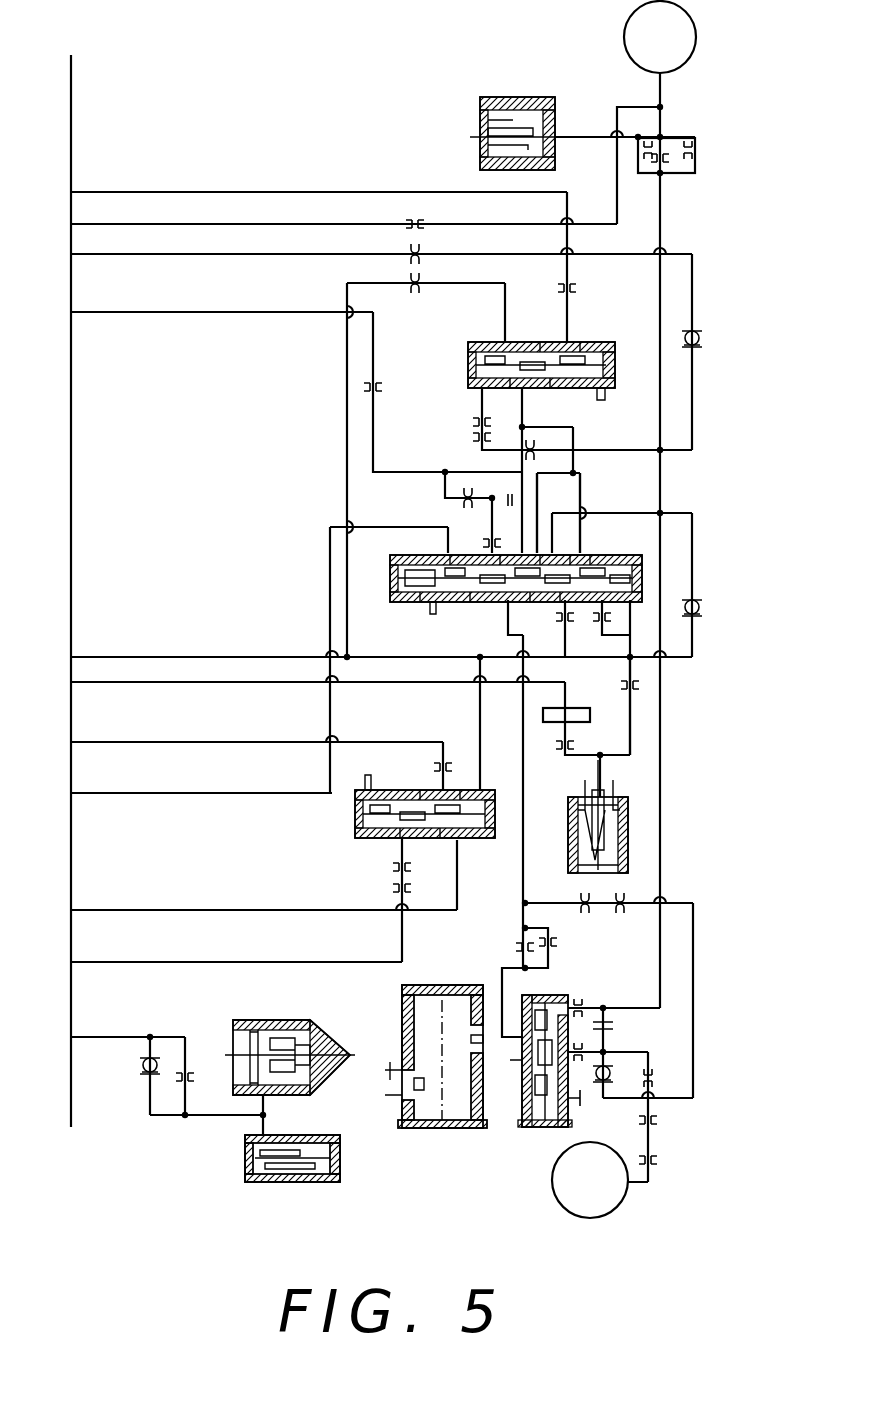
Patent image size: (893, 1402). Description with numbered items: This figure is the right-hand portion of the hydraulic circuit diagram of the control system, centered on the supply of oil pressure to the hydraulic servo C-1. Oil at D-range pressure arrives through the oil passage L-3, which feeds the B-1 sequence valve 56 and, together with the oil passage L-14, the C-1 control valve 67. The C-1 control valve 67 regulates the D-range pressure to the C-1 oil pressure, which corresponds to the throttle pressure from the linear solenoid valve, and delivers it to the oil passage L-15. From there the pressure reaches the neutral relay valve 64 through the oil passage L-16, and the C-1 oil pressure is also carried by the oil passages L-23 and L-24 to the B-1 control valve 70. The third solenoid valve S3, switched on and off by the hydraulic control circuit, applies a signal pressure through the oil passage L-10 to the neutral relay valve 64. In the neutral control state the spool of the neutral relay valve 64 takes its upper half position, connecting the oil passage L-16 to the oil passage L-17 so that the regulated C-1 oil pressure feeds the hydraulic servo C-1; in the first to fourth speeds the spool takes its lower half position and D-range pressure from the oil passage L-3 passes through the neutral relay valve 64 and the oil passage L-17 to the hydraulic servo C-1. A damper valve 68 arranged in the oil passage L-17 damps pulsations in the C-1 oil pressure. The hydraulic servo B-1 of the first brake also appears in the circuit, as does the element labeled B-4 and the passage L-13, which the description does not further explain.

The damper valve 68 is at (525, 97).
The C-1 control valve 67 is at (600, 342).
The neutral relay valve 64 is at (642, 572).
The B-1 sequence valve 56 is at (357, 840).
The B-1 control valve 70 is at (558, 995).
The third solenoid valve S3 is at (613, 815).
The brake B-4 is at (290, 1040).
The hydraulic servo of the first brake B-1 is at (590, 1180).
The hydraulic servo C-1 is at (660, 37).
The oil line L-13 is at (343, 192).
The oil passage L-14 is at (450, 290).
The oil passage L-15 is at (523, 410).
The oil passage L-17 is at (662, 405).
The oil passage L-23 is at (580, 487).
The oil passage L-16 is at (537, 500).
The oil passage L-3 is at (407, 658).
The oil passage L-10 is at (630, 725).
The oil passage L-24 is at (662, 820).